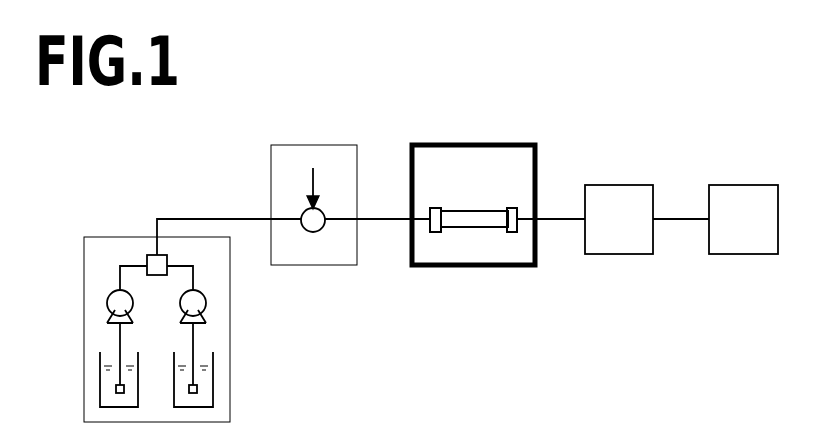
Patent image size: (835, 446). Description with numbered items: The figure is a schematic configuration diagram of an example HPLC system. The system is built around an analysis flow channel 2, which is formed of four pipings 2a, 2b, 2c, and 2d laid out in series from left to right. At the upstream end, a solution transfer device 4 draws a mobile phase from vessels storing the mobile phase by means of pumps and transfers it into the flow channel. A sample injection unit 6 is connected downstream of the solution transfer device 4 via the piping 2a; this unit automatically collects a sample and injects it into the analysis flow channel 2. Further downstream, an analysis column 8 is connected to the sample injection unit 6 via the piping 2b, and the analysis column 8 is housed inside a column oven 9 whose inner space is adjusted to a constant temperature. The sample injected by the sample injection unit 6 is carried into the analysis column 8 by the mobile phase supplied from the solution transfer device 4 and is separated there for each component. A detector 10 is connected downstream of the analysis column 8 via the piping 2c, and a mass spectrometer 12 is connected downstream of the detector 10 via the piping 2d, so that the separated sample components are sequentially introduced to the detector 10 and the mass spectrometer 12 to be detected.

The analysis flow channel 2 is at (200, 217).
The piping 2a is at (245, 221).
The piping 2b is at (373, 221).
The piping 2c is at (557, 221).
The piping 2d is at (678, 221).
The solution transfer device 4 is at (230, 352).
The sample injection unit 6 is at (333, 145).
The analysis column 8 is at (473, 211).
The column oven 9 is at (508, 145).
The detector 10 is at (629, 185).
The mass spectrometer 12 is at (758, 185).